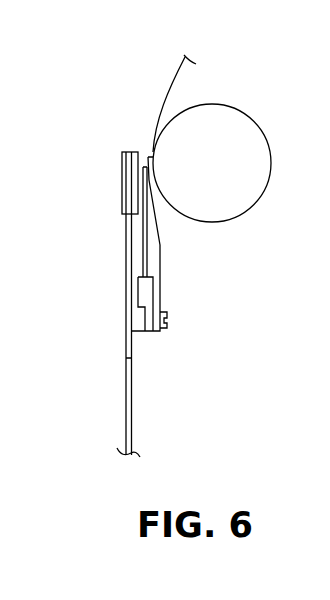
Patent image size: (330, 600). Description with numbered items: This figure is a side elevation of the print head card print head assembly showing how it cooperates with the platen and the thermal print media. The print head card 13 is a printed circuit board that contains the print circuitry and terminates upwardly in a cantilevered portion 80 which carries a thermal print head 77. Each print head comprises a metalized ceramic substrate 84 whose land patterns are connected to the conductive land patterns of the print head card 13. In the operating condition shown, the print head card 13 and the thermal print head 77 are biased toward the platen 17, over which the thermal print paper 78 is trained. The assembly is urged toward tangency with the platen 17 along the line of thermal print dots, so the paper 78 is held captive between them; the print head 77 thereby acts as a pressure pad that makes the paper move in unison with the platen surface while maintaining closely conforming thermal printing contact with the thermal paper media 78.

The print head card 13 is at (132, 403).
The platen 17 is at (227, 103).
The print head 77 is at (122, 185).
The thermal print paper 78 is at (172, 83).
The cantilevered portion 80 is at (126, 262).
The metalized ceramic substrate 84 is at (150, 178).